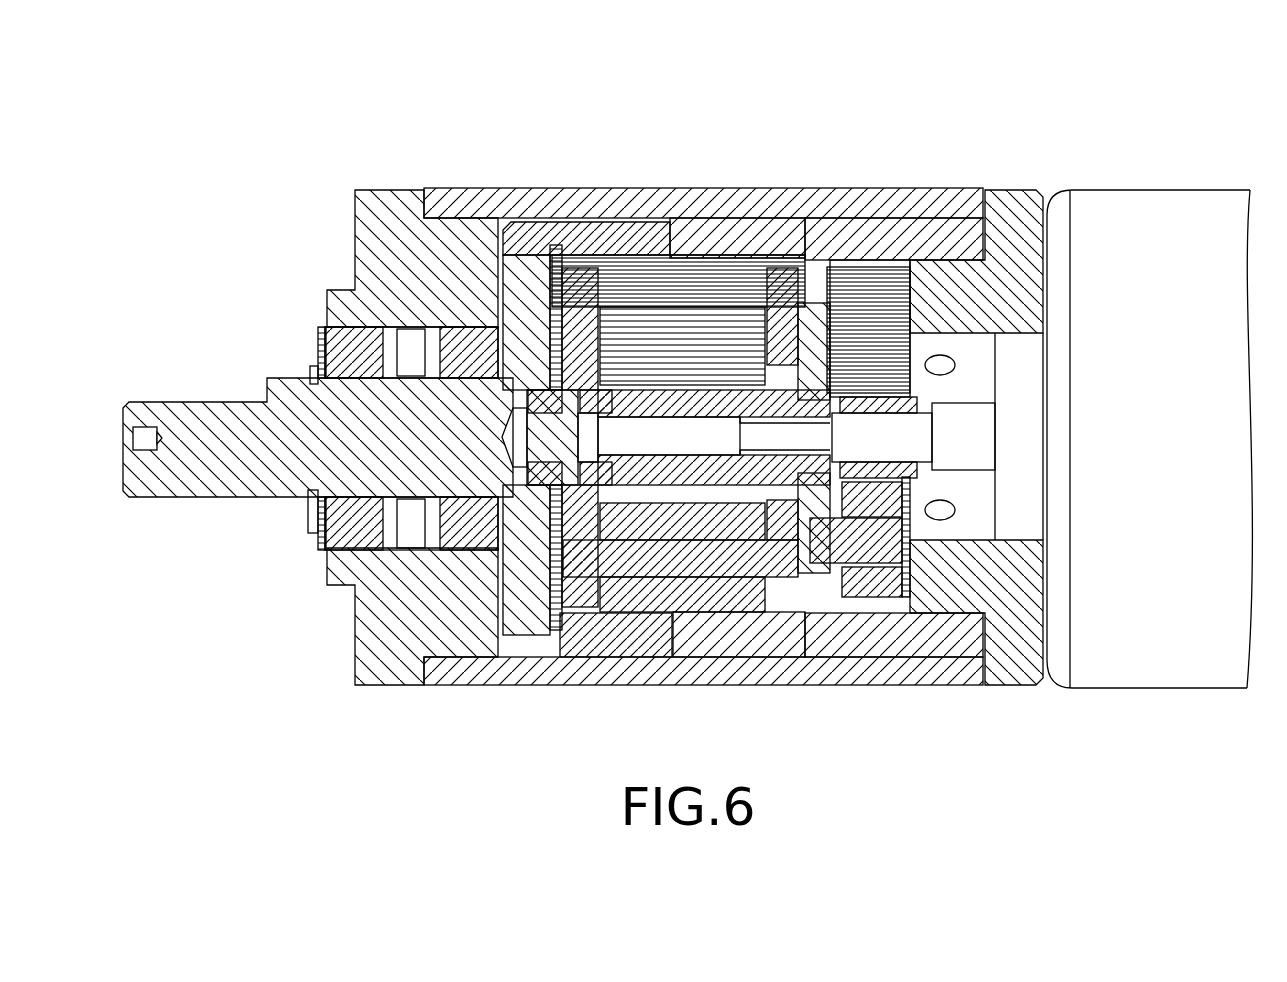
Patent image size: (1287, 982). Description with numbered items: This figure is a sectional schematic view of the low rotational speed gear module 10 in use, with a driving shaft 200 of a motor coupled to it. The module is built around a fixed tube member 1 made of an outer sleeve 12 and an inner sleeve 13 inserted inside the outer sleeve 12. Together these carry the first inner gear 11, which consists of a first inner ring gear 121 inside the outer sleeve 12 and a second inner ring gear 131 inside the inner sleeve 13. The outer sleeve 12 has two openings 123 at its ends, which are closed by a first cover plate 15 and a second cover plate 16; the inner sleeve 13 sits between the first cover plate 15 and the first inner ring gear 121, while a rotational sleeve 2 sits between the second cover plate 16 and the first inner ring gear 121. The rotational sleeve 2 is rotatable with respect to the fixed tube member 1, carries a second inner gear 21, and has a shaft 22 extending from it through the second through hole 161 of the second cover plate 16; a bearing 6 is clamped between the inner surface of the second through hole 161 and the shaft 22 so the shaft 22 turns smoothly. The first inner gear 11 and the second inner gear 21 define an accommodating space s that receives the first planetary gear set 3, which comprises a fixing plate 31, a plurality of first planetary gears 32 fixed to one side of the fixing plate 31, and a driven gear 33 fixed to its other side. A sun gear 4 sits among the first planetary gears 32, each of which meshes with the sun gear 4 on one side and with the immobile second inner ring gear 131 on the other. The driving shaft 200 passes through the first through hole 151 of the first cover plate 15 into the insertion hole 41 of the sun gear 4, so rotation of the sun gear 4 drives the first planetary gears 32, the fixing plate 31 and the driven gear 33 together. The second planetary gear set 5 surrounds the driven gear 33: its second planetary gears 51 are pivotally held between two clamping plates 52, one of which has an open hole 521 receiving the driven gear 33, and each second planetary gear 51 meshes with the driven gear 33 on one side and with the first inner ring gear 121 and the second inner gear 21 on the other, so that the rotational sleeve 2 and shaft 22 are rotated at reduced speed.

The low rotational speed gear module 10 is at (591, 409).
The fixed tube member 1 is at (591, 429).
The outer sleeve 12 is at (692, 434).
The openings 123 is at (391, 192).
The first inner ring gear 121 is at (766, 270).
The second inner ring gear 131 is at (846, 285).
The first inner gear 11 is at (868, 369).
The inner sleeve 13 is at (908, 230).
The second cover plate 16 is at (370, 232).
The second through hole 161 is at (322, 350).
The bearing 6 is at (330, 520).
The shaft 22 is at (200, 420).
The rotational sleeve 2 is at (644, 374).
The second inner gear 21 is at (612, 240).
The second planetary gears 51 is at (712, 322).
The clamping plates 52 is at (570, 243).
The open hole 521 is at (768, 522).
The second planetary gear set 5 is at (700, 634).
The driven gear 33 is at (750, 562).
The first planetary gear set 3 is at (854, 452).
The fixing plate 31 is at (835, 600).
The first planetary gears 32 is at (870, 320).
The sun gear 4 is at (905, 560).
The insertion hole 41 is at (893, 463).
The first cover plate 15 is at (985, 388).
The first through hole 151 is at (962, 345).
The driving shaft 200 is at (1152, 195).
The accommodating space s is at (688, 241).